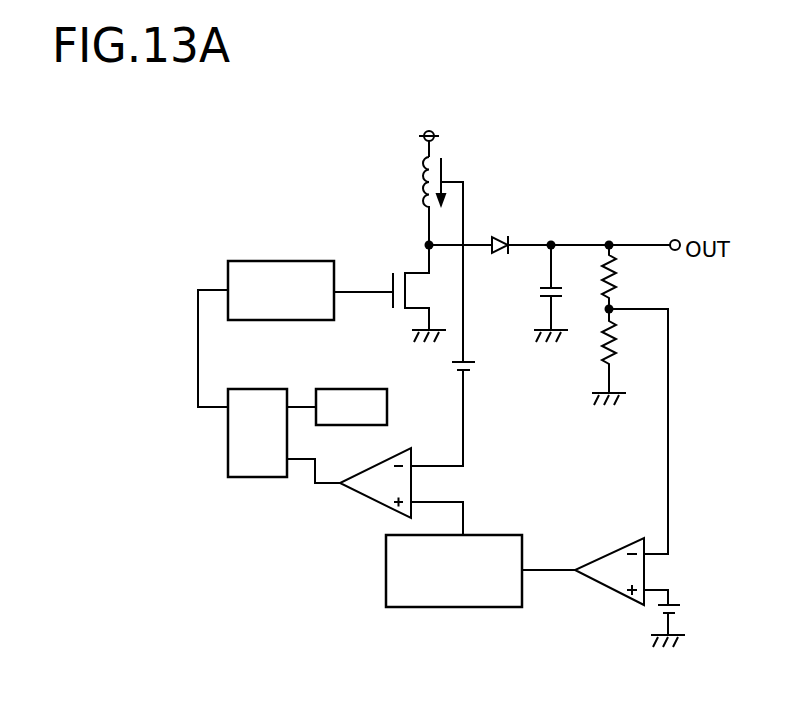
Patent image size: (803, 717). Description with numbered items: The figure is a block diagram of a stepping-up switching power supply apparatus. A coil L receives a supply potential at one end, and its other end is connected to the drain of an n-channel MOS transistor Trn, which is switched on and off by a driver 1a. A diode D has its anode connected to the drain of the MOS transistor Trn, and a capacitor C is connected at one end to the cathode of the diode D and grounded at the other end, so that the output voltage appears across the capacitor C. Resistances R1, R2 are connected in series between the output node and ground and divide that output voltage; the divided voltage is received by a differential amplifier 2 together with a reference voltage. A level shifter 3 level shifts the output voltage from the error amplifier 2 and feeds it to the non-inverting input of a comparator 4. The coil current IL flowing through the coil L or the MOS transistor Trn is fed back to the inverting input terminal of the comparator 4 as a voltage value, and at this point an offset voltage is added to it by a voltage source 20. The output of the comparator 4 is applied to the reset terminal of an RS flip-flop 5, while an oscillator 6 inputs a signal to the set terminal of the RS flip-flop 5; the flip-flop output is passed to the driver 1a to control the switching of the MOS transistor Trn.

The driver 1a is at (280, 261).
The differential amplifier 2 is at (608, 552).
The level shifter 3 is at (386, 590).
The comparator 4 is at (376, 500).
The RS flip-flop 5 is at (258, 477).
The oscillator 6 is at (352, 389).
The voltage source 20 is at (452, 366).
The coil L is at (415, 201).
The coil current IL is at (456, 177).
The n-channel MOS transistor Trn is at (390, 290).
The diode D is at (502, 264).
The capacitor C is at (558, 293).
The resistance R1 is at (625, 277).
The resistance R2 is at (620, 357).